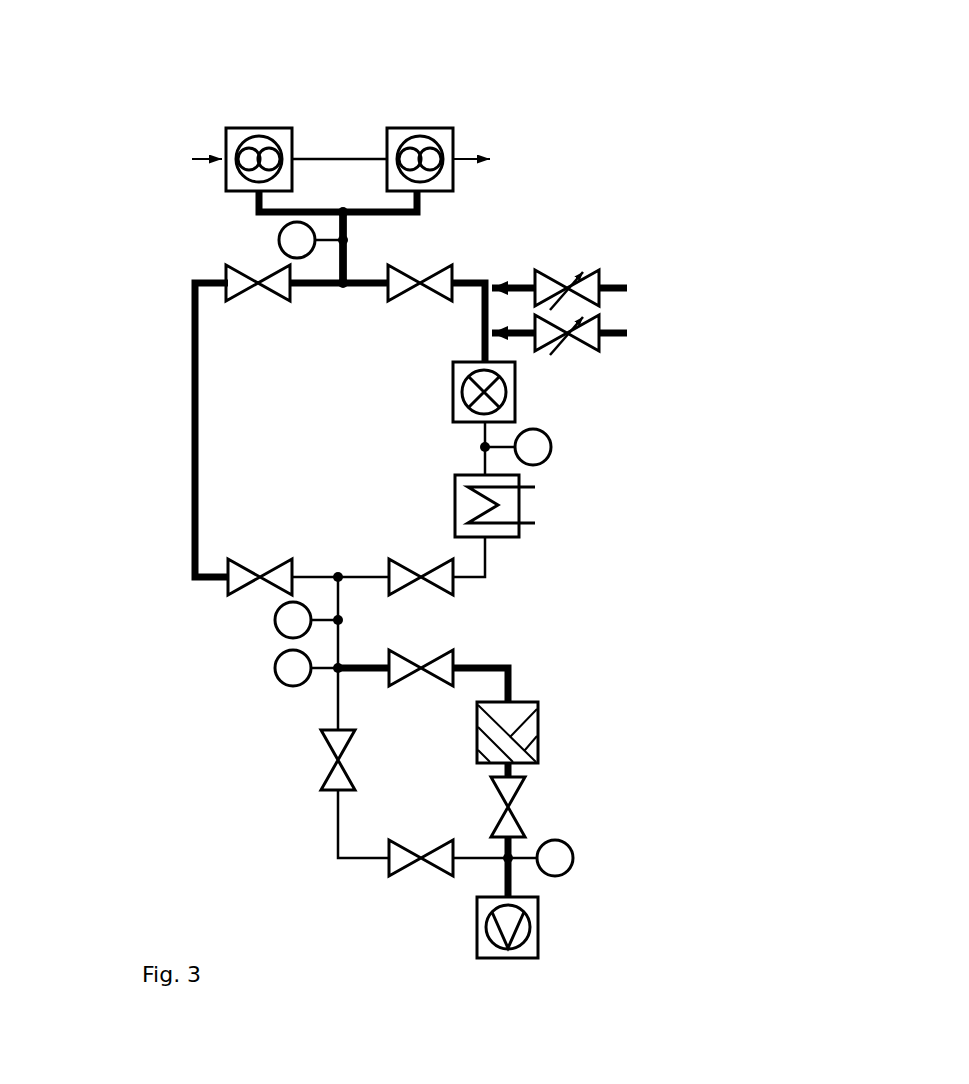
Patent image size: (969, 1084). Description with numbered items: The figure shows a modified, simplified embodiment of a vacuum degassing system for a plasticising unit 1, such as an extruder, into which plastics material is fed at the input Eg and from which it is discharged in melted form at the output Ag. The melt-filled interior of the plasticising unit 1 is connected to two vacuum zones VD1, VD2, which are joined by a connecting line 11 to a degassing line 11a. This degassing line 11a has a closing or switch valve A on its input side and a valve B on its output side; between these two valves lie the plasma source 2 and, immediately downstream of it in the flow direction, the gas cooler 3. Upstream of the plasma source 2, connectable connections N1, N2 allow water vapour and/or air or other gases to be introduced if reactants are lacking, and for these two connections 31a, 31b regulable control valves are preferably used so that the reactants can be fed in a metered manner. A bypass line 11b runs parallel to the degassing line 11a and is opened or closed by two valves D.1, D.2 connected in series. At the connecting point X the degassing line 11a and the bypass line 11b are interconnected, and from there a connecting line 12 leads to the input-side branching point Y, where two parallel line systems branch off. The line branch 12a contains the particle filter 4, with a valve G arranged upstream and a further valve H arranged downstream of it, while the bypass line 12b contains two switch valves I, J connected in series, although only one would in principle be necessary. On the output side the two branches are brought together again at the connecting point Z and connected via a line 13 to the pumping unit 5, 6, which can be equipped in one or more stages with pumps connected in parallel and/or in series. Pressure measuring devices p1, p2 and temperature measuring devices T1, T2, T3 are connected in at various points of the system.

The vacuum zone VD1 is at (259, 125).
The vacuum zone VD2 is at (417, 125).
The plasticising unit 1 is at (342, 148).
The connecting line 11 is at (349, 228).
The valve A is at (420, 266).
The valve D.1 is at (257, 264).
The bypass line 11b is at (191, 472).
The degassing line 11a is at (491, 352).
The connection 31a is at (559, 270).
The connection 31b is at (559, 326).
The connectable connection N1 is at (613, 282).
The connectable connection N2 is at (617, 328).
The plasma source 2 is at (519, 391).
The gas cooler 3 is at (523, 505).
The valve D.2 is at (258, 589).
The connecting point X is at (338, 567).
The valve B is at (421, 590).
The connecting line 12 is at (334, 645).
The valve G is at (421, 656).
The line branch 12a is at (513, 676).
The branching point Y is at (328, 678).
The switch valve I is at (333, 760).
The bypass line 12b is at (335, 825).
The switch valve J is at (421, 879).
The line 13 is at (504, 878).
The particle filter 4 is at (541, 733).
The valve H is at (527, 807).
The connecting point Z is at (516, 866).
The pumping unit 5 is at (542, 927).
The pumping unit 6 is at (542, 927).
The input Eg is at (187, 158).
The output Ag is at (496, 158).
The temperature measuring device T1 is at (297, 240).
The temperature measuring device T2 is at (533, 447).
The temperature measuring device T3 is at (293, 620).
The pressure measuring device p1 is at (293, 668).
The pressure measuring device p2 is at (555, 858).